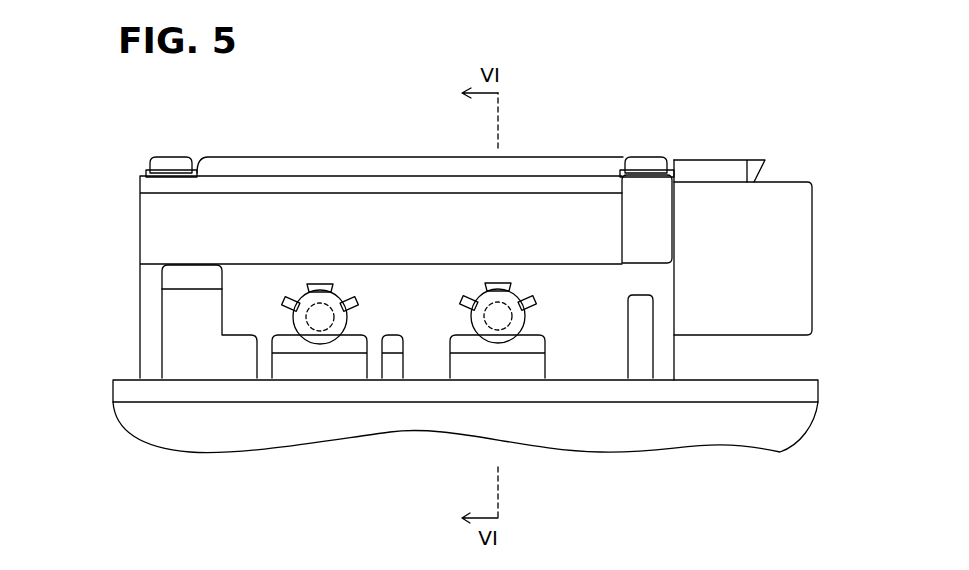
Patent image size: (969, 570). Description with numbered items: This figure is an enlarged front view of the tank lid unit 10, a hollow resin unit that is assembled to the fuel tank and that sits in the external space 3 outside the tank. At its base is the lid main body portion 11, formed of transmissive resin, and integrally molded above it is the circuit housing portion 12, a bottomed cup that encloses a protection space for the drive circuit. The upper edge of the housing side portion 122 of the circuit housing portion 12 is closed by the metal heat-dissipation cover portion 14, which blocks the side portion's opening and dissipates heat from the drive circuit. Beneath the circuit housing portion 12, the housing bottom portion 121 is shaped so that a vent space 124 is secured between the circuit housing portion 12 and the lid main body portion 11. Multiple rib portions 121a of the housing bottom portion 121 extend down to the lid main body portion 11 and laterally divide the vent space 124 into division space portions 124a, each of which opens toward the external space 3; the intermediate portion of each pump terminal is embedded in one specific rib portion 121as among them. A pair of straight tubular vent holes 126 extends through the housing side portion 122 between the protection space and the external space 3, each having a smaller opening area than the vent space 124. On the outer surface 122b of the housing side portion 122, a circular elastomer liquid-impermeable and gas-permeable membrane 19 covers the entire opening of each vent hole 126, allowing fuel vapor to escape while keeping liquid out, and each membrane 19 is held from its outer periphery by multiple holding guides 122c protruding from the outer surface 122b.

The external space 3 is at (725, 90).
The tank lid unit 10 is at (787, 172).
The lid main body portion 11 is at (113, 381).
The circuit housing portion 12 is at (140, 264).
The heat-dissipation cover portion 14 is at (140, 176).
The liquid-impermeable and gas-permeable membrane 19 is at (320, 284).
The housing bottom portion 121 is at (240, 345).
The rib portion 121a is at (265, 350).
The specific rib portion 121as is at (433, 360).
The housing side portion 122 is at (162, 289).
The outer surface 122b is at (237, 307).
The holding guide 122c is at (297, 343).
The vent space 124 is at (467, 497).
The division space portion 124a is at (330, 367).
The vent hole 126 is at (320, 328).